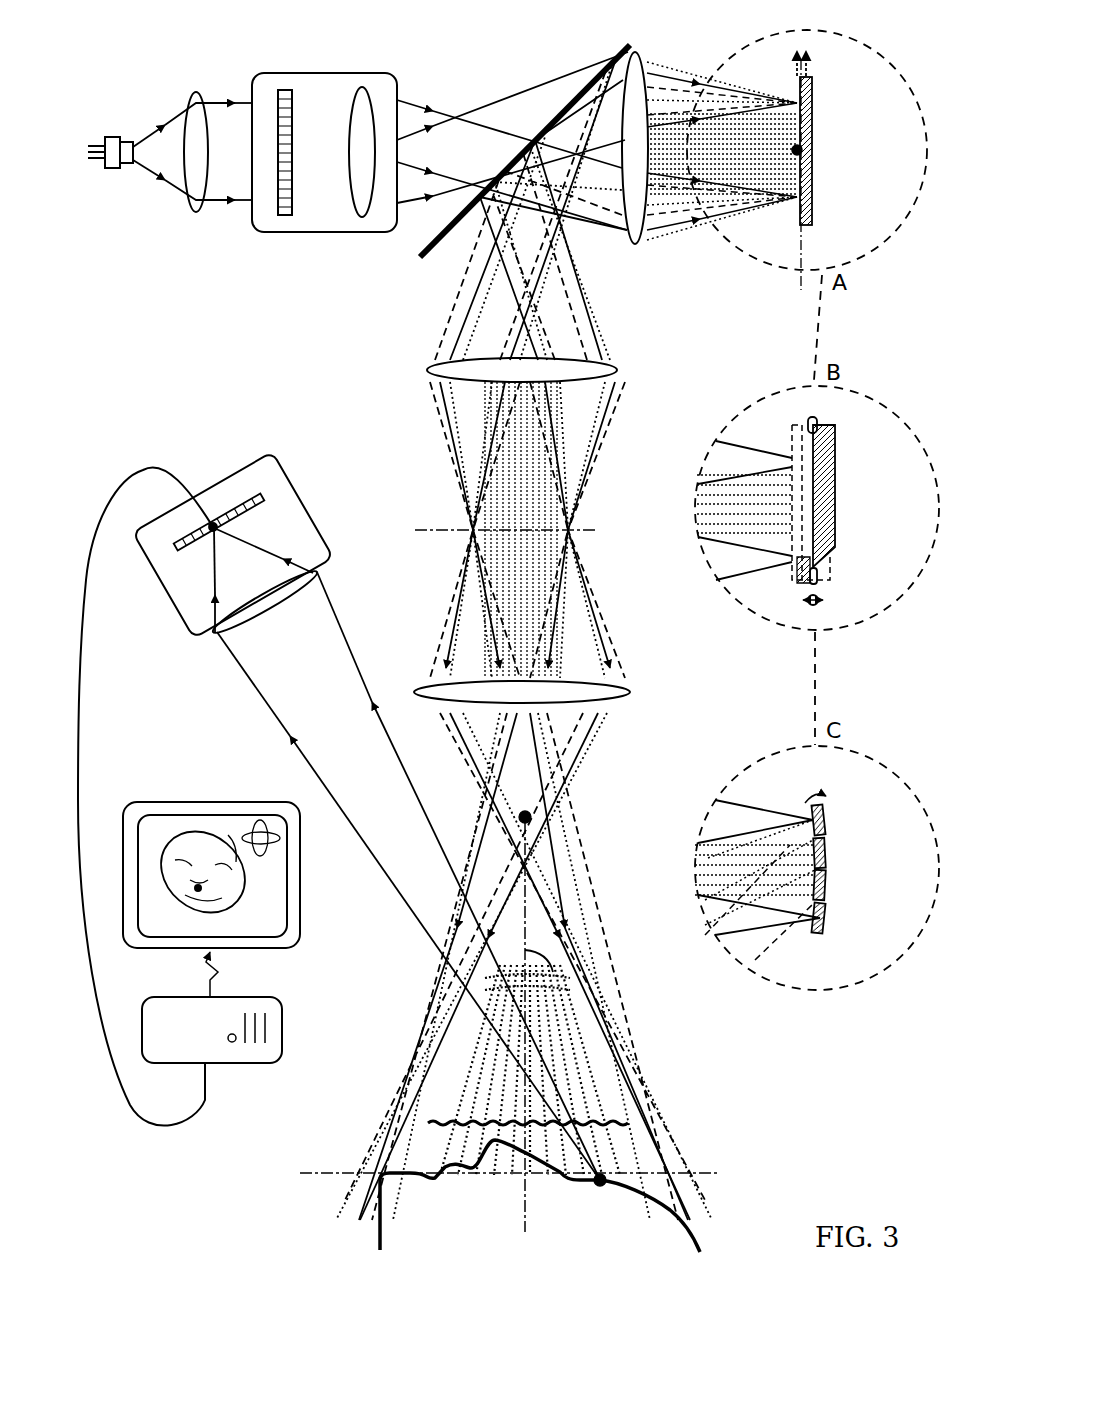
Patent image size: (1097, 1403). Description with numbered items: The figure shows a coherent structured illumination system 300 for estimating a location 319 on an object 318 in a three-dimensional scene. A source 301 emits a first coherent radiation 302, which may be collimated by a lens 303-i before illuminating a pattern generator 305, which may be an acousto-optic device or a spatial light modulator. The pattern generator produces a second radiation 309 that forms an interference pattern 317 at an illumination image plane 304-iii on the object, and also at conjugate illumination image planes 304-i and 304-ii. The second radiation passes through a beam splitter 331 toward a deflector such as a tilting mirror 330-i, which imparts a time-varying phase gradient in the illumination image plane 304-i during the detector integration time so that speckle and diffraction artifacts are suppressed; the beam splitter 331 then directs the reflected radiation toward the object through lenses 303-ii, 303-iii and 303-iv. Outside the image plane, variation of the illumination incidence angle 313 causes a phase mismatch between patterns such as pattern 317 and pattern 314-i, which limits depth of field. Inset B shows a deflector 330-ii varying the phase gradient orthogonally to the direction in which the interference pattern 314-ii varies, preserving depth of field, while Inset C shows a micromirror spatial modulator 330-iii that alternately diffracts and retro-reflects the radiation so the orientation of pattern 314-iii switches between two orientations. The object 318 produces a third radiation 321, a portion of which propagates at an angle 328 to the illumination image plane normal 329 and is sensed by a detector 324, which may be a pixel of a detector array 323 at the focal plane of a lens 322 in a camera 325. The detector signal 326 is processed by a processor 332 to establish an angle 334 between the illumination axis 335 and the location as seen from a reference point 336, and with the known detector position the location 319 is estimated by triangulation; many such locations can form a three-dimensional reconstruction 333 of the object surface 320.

The system 300 is at (170, 348).
The source 301 is at (113, 137).
The first coherent radiation 302 is at (218, 101).
The lens 303-i is at (196, 213).
The pattern generator 305 is at (315, 232).
The second radiation 309 is at (467, 113).
The beam splitter 331 is at (610, 67).
The lens 303-ii is at (637, 244).
The interference pattern 314-i is at (785, 200).
The tilting mirror 330-i is at (814, 128).
The illumination image plane 304-i is at (800, 295).
The interference pattern 314-ii is at (786, 535).
The deflector 330-ii is at (836, 483).
The interference pattern 314-iii is at (800, 862).
The micromirror spatial modulator 330-iii is at (840, 864).
The lens 303-iii is at (428, 370).
The illumination image plane 304-ii is at (425, 531).
The lens 303-iv is at (632, 692).
The reference point 336 is at (532, 817).
The illumination axis 335 is at (530, 1198).
The angle 334 is at (553, 950).
The angle 328 is at (553, 1050).
The illumination image plane normal 329 is at (612, 1078).
The illumination incidence angle 313 is at (570, 1092).
The interference pattern 317 is at (428, 1120).
The illumination image plane 304-iii is at (302, 1173).
The object 318 is at (408, 1217).
The object surface 320 is at (700, 1243).
The location 319 is at (606, 1178).
The third radiation 321 is at (285, 733).
The lens 322 is at (210, 640).
The camera 325 is at (315, 515).
The detector array 323 is at (265, 500).
The detector 324 is at (213, 535).
The detector signal 326 is at (78, 726).
The 3D reconstruction 333 is at (263, 880).
The processor 332 is at (282, 1000).